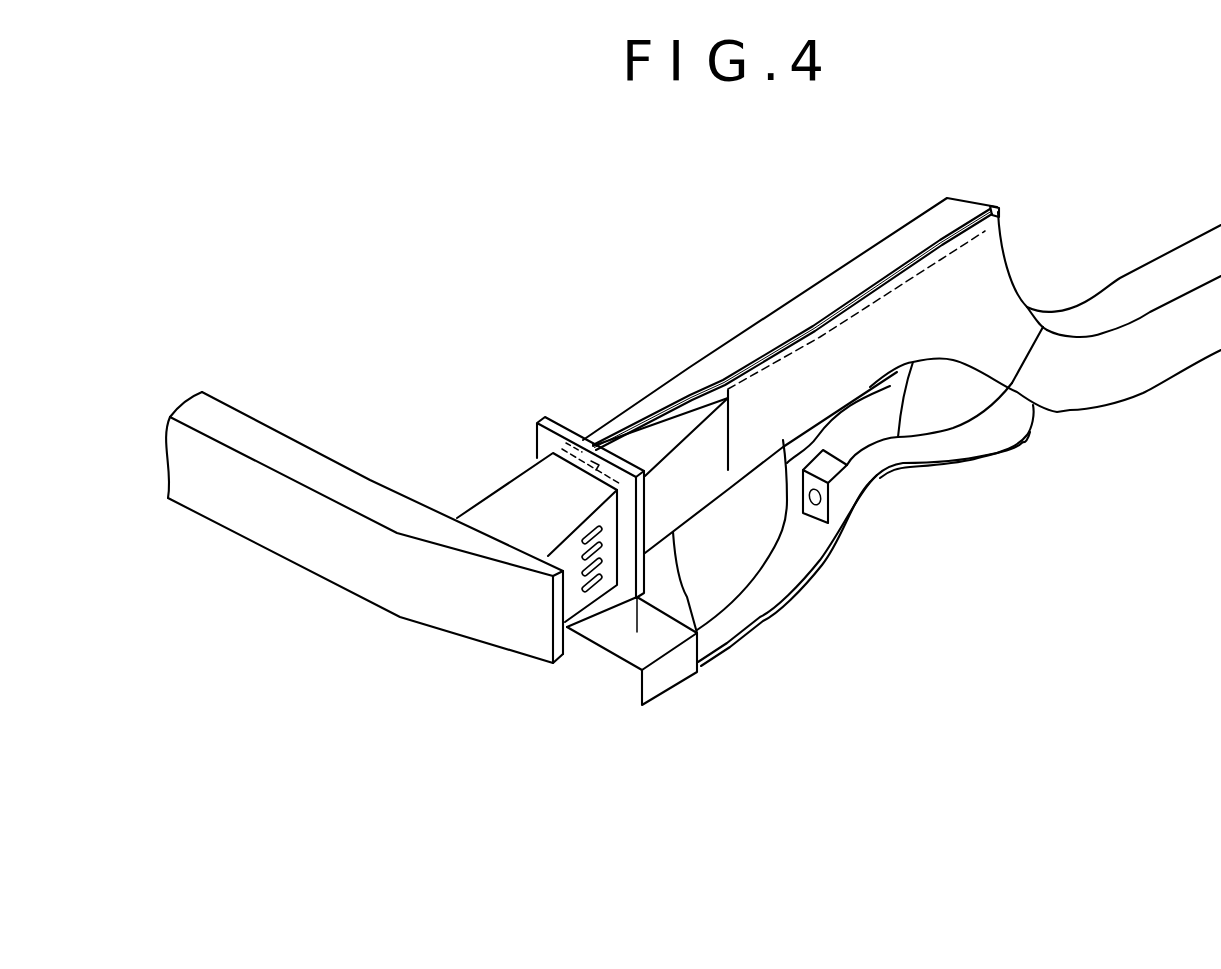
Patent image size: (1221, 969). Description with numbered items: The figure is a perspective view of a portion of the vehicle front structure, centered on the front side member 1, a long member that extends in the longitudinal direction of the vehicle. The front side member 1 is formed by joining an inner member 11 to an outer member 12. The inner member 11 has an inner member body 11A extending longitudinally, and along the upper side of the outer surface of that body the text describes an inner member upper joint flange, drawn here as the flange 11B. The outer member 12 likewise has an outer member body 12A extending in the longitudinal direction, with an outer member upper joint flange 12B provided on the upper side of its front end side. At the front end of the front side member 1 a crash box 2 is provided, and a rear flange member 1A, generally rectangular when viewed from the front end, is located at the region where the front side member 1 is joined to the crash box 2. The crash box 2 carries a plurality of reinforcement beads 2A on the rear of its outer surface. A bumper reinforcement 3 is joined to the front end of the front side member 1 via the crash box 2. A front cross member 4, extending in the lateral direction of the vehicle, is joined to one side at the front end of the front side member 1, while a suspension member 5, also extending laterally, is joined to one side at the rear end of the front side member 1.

The front side member 1 is at (721, 288).
The rear flange member 1A is at (544, 444).
The crash box 2 is at (492, 510).
The reinforcement beads 2A is at (587, 556).
The bumper reinforcement 3 is at (328, 472).
The front cross member 4 is at (670, 676).
The suspension member 5 is at (883, 472).
The inner member 11 is at (674, 363).
The inner member body 11A is at (897, 243).
The guide rail 11B is at (810, 323).
The outer member 12 is at (889, 384).
The outer member body 12A is at (770, 427).
The outer member upper joint flange 12B is at (867, 287).